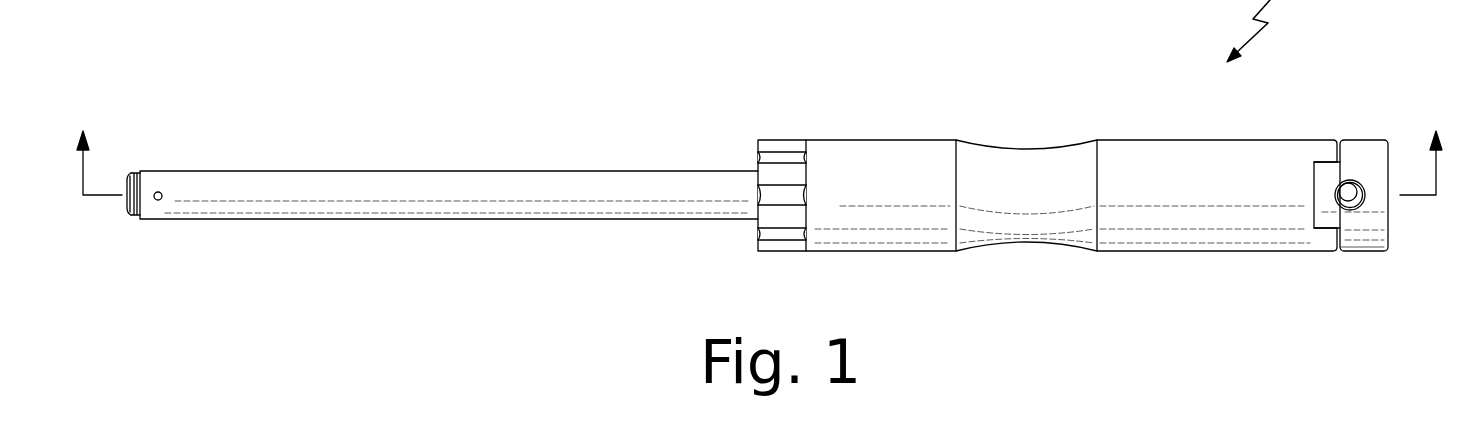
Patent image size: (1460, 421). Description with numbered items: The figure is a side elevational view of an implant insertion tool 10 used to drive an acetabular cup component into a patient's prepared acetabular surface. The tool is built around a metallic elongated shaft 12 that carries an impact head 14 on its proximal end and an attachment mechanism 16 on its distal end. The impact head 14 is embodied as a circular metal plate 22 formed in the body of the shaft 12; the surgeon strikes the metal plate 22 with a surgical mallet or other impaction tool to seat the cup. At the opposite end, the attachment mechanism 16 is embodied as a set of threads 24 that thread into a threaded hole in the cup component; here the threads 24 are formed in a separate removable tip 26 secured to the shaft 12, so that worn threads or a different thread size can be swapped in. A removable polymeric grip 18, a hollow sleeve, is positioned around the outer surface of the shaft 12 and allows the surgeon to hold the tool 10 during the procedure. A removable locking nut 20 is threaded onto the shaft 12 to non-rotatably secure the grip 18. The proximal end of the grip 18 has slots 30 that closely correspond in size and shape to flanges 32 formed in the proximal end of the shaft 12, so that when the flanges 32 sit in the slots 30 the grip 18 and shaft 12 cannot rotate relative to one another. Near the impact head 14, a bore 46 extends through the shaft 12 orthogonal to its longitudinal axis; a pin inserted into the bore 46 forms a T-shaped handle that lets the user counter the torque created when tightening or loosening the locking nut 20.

The implant insertion tool 10 is at (1220, 420).
The elongated shaft 12 is at (502, 182).
The impact head 14 is at (1352, 151).
The attachment mechanism 16 is at (139, 208).
The grip 18 is at (890, 143).
The locking nut 20 is at (780, 143).
The metal plate 22 is at (1360, 236).
The threads 24 is at (131, 176).
The removable tip 26 is at (128, 202).
The slots 30 is at (1318, 228).
The flanges 32 is at (1321, 190).
The bore 46 is at (1366, 193).